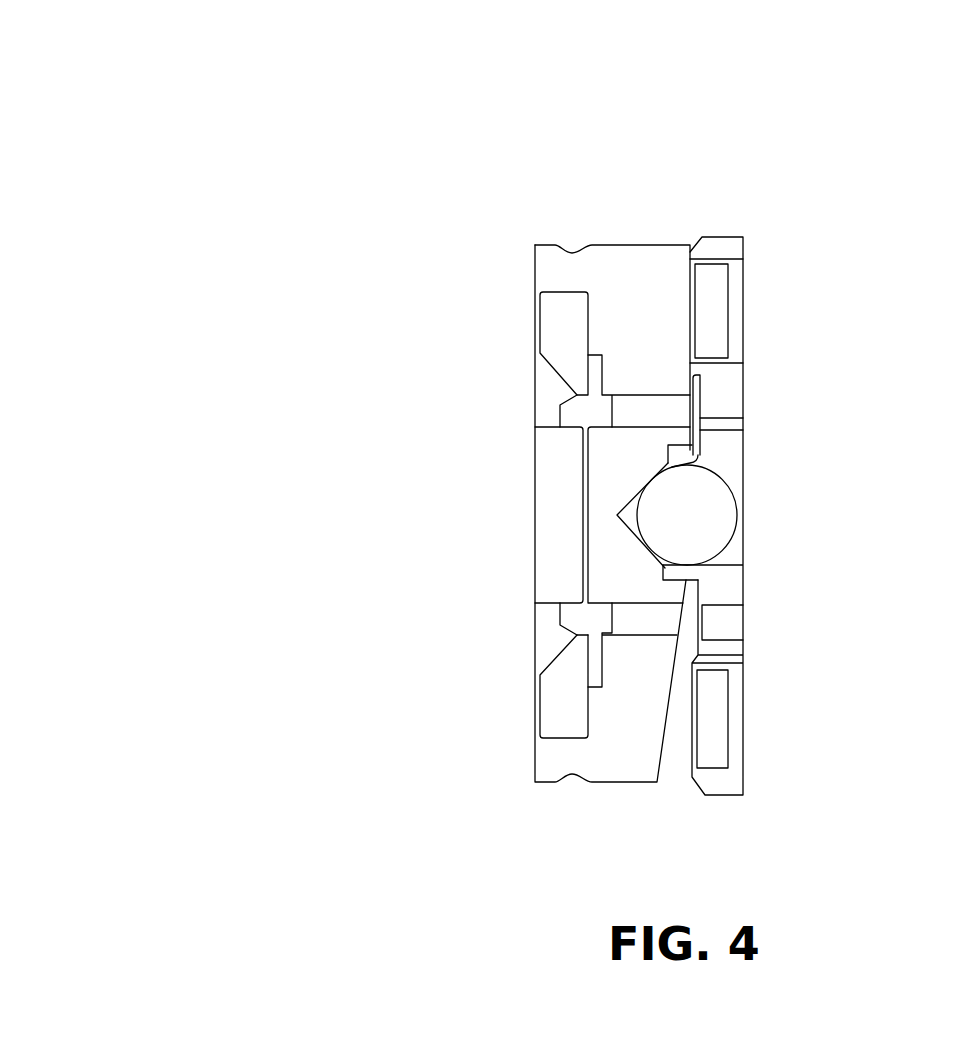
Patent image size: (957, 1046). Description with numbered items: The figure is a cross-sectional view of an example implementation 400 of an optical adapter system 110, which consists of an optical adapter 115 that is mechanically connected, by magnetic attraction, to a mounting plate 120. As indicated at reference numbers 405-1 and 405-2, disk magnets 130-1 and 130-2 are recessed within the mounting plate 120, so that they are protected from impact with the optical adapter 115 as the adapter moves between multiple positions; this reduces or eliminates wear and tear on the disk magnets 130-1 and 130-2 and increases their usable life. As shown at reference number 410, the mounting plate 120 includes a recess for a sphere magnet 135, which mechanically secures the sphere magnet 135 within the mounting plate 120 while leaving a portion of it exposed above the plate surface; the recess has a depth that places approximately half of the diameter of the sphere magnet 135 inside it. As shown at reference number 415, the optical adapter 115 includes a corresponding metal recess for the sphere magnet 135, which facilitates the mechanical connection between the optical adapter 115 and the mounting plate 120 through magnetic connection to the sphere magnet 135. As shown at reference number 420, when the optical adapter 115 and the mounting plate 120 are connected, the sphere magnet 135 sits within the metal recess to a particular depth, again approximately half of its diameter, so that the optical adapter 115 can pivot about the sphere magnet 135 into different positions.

The example implementation 400 is at (156, 65).
The optical adapter system 110 is at (792, 843).
The optical adapter 115 is at (616, 234).
The mounting plate 120 is at (732, 226).
The recessing of first disk magnet 405-1 is at (765, 266).
The recessing of second disk magnet 405-2 is at (770, 701).
The disk magnet 130-1 is at (712, 328).
The disk magnet 130-2 is at (712, 748).
The recess for sphere magnets 410 is at (756, 494).
The sphere magnet 135 is at (742, 548).
The metal recess 415 is at (627, 530).
The location of sphere magnet within metal recess 420 is at (606, 489).